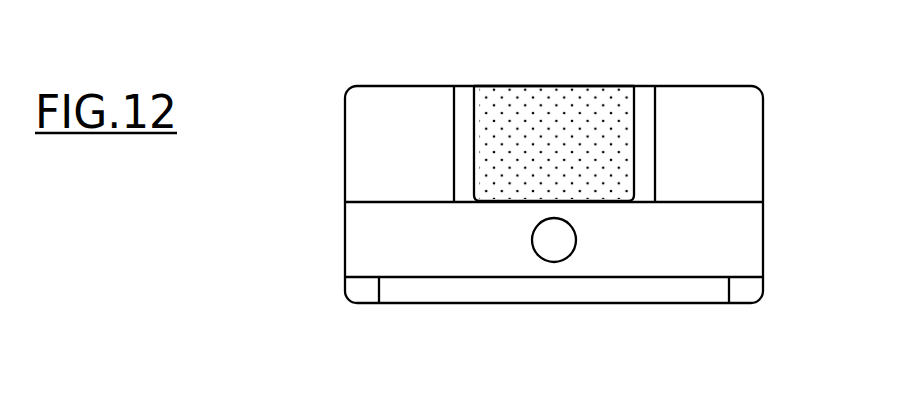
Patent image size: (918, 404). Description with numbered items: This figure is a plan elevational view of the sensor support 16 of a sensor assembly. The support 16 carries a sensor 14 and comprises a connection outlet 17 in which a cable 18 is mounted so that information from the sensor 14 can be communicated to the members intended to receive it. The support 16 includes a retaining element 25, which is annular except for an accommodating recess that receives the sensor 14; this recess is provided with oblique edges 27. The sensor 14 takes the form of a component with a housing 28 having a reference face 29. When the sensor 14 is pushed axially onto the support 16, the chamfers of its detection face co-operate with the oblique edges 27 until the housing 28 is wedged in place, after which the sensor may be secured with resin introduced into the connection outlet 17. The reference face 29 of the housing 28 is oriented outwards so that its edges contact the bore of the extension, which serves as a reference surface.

The sensor 14 is at (599, 76).
The sensor support 16 is at (336, 224).
The connection outlet 17 is at (493, 240).
The cable 18 is at (548, 240).
The retaining element 25 is at (419, 132).
The oblique edges 27 is at (465, 108).
The housing 28 is at (520, 92).
The reference face 29 is at (550, 157).